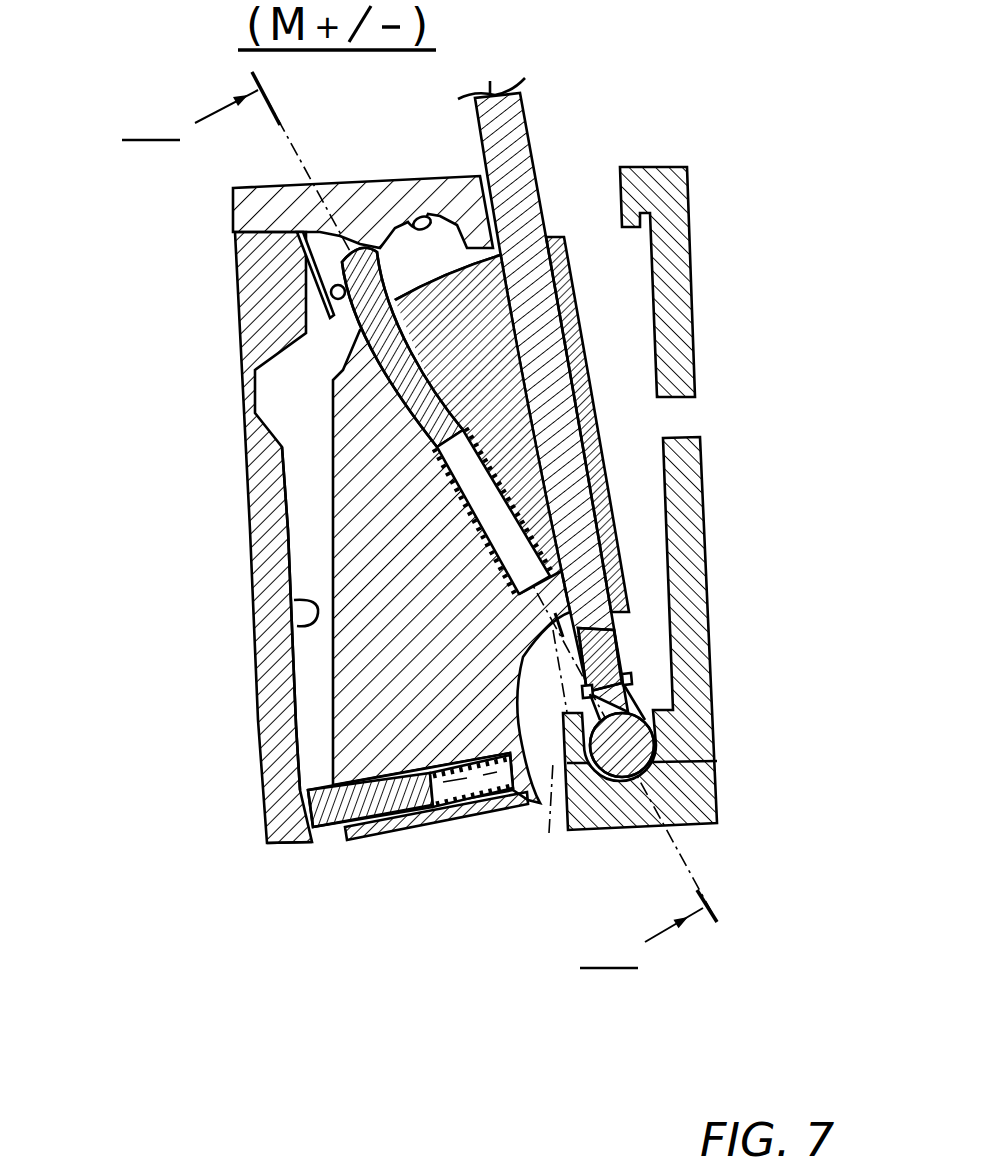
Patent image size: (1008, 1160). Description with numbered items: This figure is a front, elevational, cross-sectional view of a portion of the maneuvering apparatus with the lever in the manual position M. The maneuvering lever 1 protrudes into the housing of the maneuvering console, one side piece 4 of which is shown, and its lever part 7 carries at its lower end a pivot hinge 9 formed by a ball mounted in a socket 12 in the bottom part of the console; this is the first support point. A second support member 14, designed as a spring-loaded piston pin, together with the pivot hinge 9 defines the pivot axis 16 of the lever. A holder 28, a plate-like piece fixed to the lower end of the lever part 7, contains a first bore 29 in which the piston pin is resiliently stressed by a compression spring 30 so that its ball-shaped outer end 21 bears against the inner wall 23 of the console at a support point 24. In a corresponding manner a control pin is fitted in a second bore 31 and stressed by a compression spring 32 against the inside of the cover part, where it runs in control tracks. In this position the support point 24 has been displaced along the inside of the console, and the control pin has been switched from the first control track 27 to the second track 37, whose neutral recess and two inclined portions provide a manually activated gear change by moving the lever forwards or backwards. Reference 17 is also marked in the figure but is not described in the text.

The maneuvering lever 1 is at (540, 158).
The side piece 4 is at (697, 660).
The lever part 7 is at (613, 520).
The pivot hinge 9 is at (600, 792).
The socket 12 is at (662, 748).
The second support member 14 is at (328, 848).
The pivot axis 16 is at (550, 833).
The section line 17 is at (297, 153).
The outer end 21 is at (325, 836).
The inner wall 23 is at (294, 619).
The support point 24 is at (292, 778).
The control track 27 is at (399, 190).
The holder 28 is at (333, 408).
The first bore 29 is at (380, 830).
The compression spring 30 is at (444, 835).
The second bore 31 is at (458, 485).
The compression spring 32 is at (480, 527).
The second track 37 is at (330, 313).